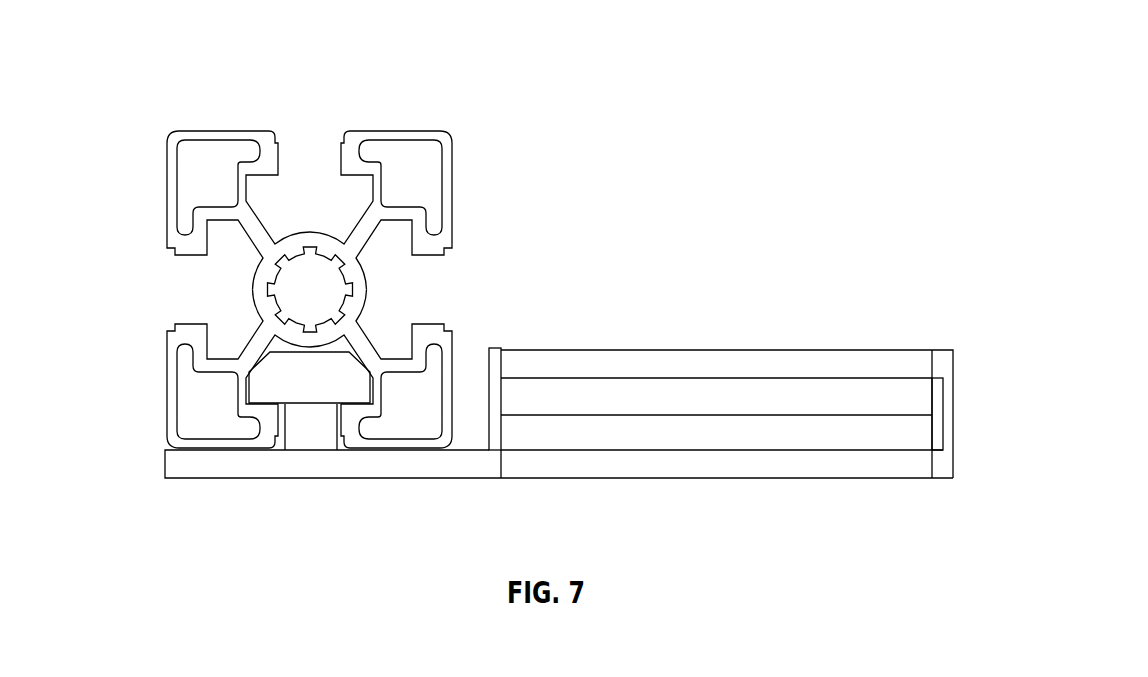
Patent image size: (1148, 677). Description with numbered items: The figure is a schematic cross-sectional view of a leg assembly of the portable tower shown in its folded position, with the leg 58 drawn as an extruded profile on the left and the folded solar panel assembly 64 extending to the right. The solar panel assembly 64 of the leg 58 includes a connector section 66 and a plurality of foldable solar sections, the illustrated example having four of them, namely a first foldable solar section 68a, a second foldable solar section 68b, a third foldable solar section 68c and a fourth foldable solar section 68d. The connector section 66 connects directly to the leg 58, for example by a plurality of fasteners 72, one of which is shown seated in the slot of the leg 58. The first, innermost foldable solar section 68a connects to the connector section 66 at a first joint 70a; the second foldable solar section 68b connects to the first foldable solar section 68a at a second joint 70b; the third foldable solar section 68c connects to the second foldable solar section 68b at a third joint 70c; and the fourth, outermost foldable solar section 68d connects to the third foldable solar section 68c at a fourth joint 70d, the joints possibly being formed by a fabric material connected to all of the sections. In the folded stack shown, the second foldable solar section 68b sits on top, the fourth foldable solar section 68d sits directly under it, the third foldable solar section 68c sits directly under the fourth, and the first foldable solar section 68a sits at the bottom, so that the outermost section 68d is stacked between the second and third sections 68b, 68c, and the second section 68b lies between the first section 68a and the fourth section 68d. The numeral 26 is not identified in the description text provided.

The extruded frame member 26 is at (345, 277).
The leg 58 is at (158, 190).
The solar panel assembly 64 is at (731, 384).
The connector section 66 is at (404, 489).
The first foldable solar section 68a is at (693, 468).
The second foldable solar section 68b is at (622, 369).
The third foldable solar section 68c is at (876, 439).
The fourth foldable solar section 68d is at (728, 397).
The first joint 70a is at (503, 489).
The second joint 70b is at (954, 450).
The third joint 70c is at (488, 357).
The fourth joint 70d is at (944, 397).
The fasteners 72 is at (306, 433).